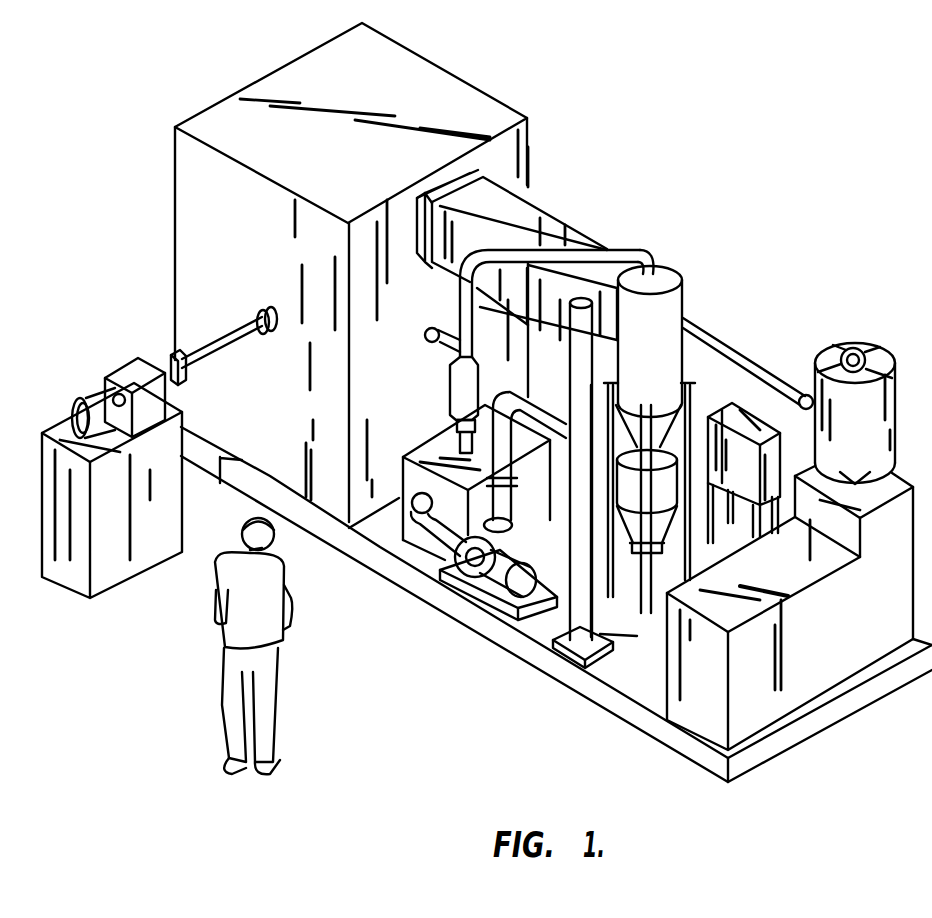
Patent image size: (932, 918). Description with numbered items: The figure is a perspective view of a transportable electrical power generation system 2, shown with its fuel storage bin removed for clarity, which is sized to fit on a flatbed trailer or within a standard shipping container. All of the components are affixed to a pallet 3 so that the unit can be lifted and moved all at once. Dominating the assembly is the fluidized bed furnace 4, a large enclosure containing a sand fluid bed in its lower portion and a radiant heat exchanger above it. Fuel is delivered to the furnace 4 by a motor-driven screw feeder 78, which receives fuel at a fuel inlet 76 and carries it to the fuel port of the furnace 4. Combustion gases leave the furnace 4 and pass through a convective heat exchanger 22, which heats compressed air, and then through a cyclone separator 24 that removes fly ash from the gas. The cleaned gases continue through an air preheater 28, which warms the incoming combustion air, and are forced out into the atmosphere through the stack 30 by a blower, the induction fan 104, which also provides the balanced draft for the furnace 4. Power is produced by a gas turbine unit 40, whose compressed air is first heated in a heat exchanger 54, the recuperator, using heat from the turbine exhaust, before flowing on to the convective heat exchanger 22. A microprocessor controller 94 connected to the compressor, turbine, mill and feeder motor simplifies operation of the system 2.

The transportable electrical power generation system 2 is at (774, 124).
The pallet 3 is at (721, 768).
The fluidized bed furnace 4 is at (246, 97).
The convective heat exchanger 22 is at (520, 220).
The cyclone separator 24 is at (685, 292).
The air preheater 28 is at (403, 502).
The stack 30 is at (560, 640).
The gas turbine unit 40 is at (665, 708).
The heat exchanger (recuperator) 54 is at (824, 356).
The fuel inlet 76 is at (185, 382).
The screw feeder 78 is at (218, 358).
The controller 94 is at (742, 418).
The induction fan (blower) 104 is at (455, 572).